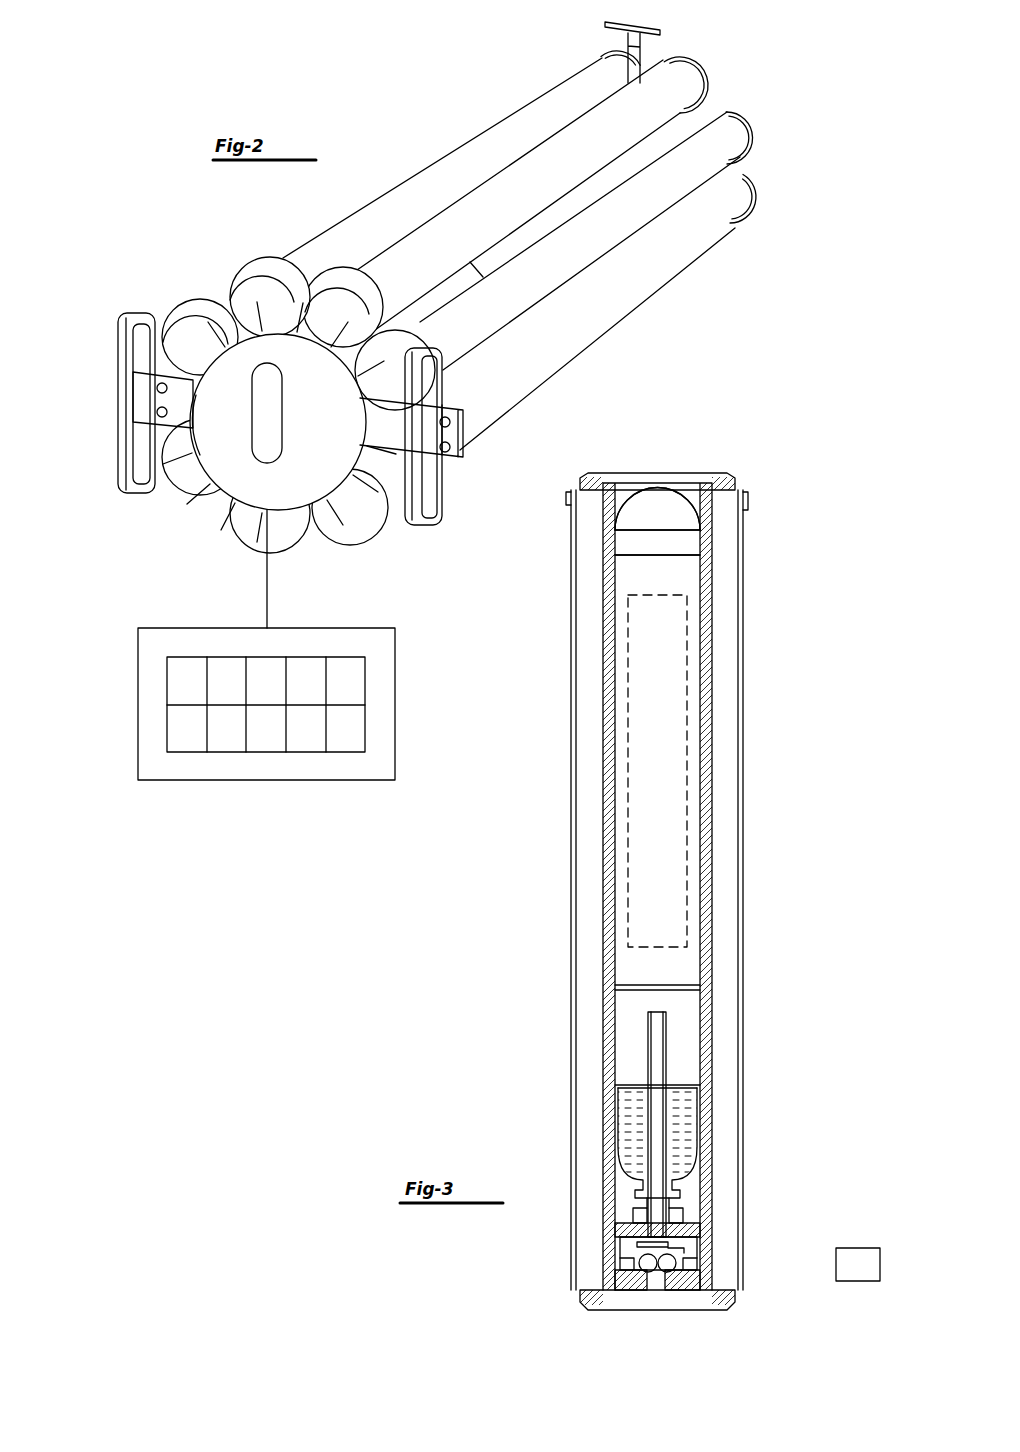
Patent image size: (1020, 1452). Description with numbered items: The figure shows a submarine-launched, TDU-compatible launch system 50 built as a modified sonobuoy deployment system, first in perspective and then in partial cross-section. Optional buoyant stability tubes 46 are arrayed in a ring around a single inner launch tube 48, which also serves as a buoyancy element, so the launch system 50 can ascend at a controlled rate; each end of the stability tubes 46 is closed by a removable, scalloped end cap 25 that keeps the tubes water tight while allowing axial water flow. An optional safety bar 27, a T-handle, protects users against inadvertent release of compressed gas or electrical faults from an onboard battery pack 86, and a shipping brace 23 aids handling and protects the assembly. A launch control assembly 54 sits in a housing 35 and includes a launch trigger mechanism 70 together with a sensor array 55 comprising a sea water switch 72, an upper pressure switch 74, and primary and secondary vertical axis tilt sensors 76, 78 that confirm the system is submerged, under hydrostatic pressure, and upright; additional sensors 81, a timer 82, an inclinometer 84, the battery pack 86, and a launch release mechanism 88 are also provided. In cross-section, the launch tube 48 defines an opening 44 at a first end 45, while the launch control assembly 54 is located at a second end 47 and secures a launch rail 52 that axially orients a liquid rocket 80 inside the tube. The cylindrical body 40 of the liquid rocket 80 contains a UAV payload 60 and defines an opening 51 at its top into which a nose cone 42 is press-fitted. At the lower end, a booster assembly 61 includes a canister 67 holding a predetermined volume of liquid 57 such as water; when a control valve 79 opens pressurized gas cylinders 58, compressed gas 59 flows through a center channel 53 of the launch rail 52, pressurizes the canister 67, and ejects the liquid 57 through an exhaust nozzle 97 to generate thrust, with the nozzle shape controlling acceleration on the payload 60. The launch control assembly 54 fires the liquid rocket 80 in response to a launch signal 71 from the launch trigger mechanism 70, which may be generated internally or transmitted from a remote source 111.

In FIG. 2, the shipping brace 23 is at (126, 380).
In FIG. 2, the end cap 25 is at (735, 112).
In FIG. 2, the safety bar 27 is at (627, 47).
In FIG. 2, the housing 35 is at (225, 472).
In FIG. 3, the cylindrical body 40 is at (612, 655).
In FIG. 3, the nose cone 42 is at (656, 500).
In FIG. 3, the opening 44 is at (697, 475).
In FIG. 3, the first end 45 is at (764, 460).
In FIG. 2, the stability tube 46 is at (545, 180).
In FIG. 3, the stability tube 46 is at (571, 795).
In FIG. 3, the second end 47 is at (562, 1291).
In FIG. 2, the launch tube 48 is at (540, 225).
In FIG. 3, the launch tube 48 is at (712, 648).
In FIG. 2, the launch system 50 is at (772, 124).
In FIG. 3, the launch system 50 is at (798, 527).
In FIG. 3, the opening 51 is at (675, 540).
In FIG. 3, the launch rail 52 is at (668, 1040).
In FIG. 3, the center channel 53 is at (595, 600).
In FIG. 2, the launch control assembly 54 is at (138, 648).
In FIG. 3, the launch control assembly 54 is at (702, 1230).
In FIG. 2, the sensor array 55 is at (365, 742).
In FIG. 3, the liquid 57 is at (632, 1142).
In FIG. 3, the gas cylinders 58 is at (675, 1270).
In FIG. 3, the compressed gas 59 is at (640, 1264).
In FIG. 3, the UAV payload 60 is at (690, 765).
In FIG. 3, the booster assembly 61 is at (655, 982).
In FIG. 3, the canister 67 is at (698, 1130).
In FIG. 2, the launch trigger mechanism 70 is at (196, 693).
In FIG. 3, the launch signal 71 is at (792, 1265).
In FIG. 2, the sea water switch 72 is at (236, 693).
In FIG. 2, the upper pressure switch 74 is at (276, 693).
In FIG. 2, the primary vertical axis tilt sensor 76 is at (316, 693).
In FIG. 2, the secondary vertical axis tilt sensor 78 is at (355, 693).
In FIG. 3, the control valve 79 is at (640, 1242).
In FIG. 3, the liquid rocket 80 is at (626, 498).
In FIG. 2, the additional sensors 81 is at (196, 740).
In FIG. 2, the timer 82 is at (236, 740).
In FIG. 2, the inclinometer 84 is at (276, 740).
In FIG. 2, the battery pack 86 is at (316, 740).
In FIG. 2, the launch release mechanism 88 is at (355, 740).
In FIG. 3, the exhaust nozzle 97 is at (682, 1200).
In FIG. 3, the remote source 111 is at (770, 1265).